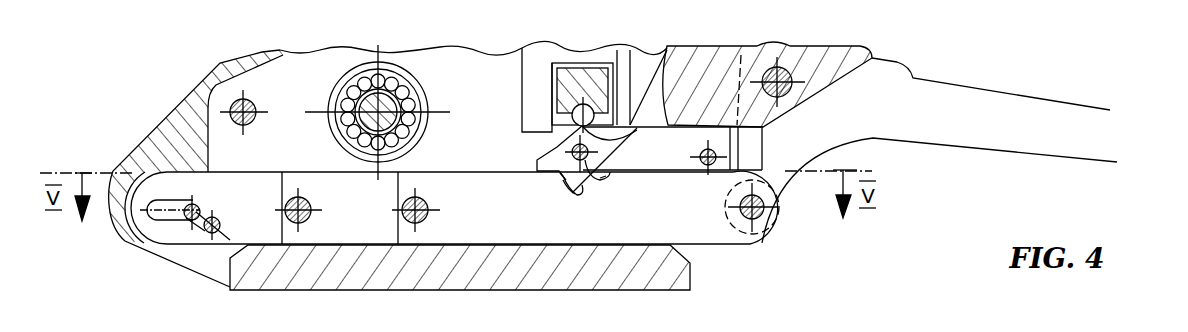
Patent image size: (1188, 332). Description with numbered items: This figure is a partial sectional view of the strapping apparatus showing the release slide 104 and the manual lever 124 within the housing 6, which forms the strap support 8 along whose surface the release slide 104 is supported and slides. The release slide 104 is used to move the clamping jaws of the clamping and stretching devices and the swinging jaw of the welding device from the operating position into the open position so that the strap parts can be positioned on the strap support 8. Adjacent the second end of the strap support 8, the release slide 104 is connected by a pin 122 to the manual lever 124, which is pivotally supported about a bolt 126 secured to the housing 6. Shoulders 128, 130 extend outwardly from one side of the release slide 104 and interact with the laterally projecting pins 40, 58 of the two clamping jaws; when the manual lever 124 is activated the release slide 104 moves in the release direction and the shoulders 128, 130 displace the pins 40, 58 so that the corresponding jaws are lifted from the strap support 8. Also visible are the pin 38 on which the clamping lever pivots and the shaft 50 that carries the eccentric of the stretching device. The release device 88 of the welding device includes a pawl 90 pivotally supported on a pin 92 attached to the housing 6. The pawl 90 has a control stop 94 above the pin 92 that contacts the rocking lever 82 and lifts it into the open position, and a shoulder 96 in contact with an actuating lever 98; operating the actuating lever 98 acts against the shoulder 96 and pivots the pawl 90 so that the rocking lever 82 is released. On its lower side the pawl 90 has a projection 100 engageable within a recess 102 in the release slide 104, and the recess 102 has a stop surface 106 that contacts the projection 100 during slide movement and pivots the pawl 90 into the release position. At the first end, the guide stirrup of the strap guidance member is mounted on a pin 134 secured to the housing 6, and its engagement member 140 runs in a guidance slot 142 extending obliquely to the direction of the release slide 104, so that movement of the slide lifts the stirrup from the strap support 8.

The housing 6 is at (172, 137).
The strap support 8 is at (680, 268).
The pin 38 is at (257, 108).
The pin 40 is at (306, 208).
The shaft 50 is at (420, 80).
The pin 58 is at (428, 214).
The rocking lever 82 is at (578, 80).
The release device 88 is at (536, 116).
The pawl 90 is at (550, 158).
The pin 92 is at (590, 178).
The control stop 94 is at (627, 148).
The shoulder 96 is at (628, 130).
The actuating lever 98 is at (690, 67).
The projection 100 is at (603, 173).
The recess 102 is at (563, 195).
The release slide 104 is at (773, 213).
The stop surface 106 is at (572, 177).
The pin 122 is at (757, 218).
The manual lever 124 is at (950, 100).
The bolt 126 is at (790, 95).
The shoulder 128 is at (268, 185).
The shoulder 130 is at (393, 200).
The pin 134 is at (200, 208).
The engagement member 140 is at (221, 218).
The guidance slot 142 is at (195, 228).